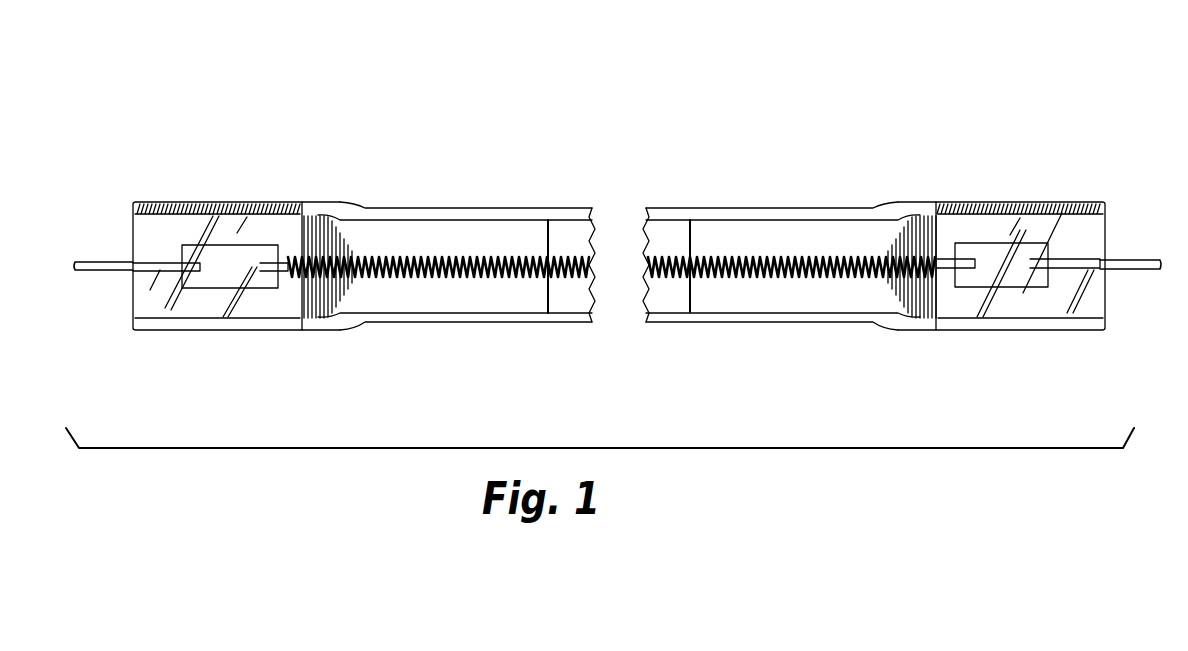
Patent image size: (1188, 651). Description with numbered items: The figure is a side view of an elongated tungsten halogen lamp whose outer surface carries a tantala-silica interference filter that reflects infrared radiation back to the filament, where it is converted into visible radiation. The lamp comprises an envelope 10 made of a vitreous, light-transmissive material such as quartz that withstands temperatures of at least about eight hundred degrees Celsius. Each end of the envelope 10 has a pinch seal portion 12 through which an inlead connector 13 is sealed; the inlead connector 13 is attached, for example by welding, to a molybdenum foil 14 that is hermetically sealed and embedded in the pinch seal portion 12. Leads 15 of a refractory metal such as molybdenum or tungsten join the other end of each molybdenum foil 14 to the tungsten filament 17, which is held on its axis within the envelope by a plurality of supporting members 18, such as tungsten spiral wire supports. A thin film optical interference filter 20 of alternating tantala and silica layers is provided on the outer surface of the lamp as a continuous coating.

The envelope 10 is at (656, 96).
The pinch seal portion 12 is at (185, 331).
The inlead connector 13 is at (88, 280).
The molybdenum foil 14 is at (240, 247).
The lead 15 is at (294, 252).
The tungsten filament 17 is at (792, 280).
The supporting member 18 is at (548, 314).
The thin film optical interference filter 20 is at (392, 323).